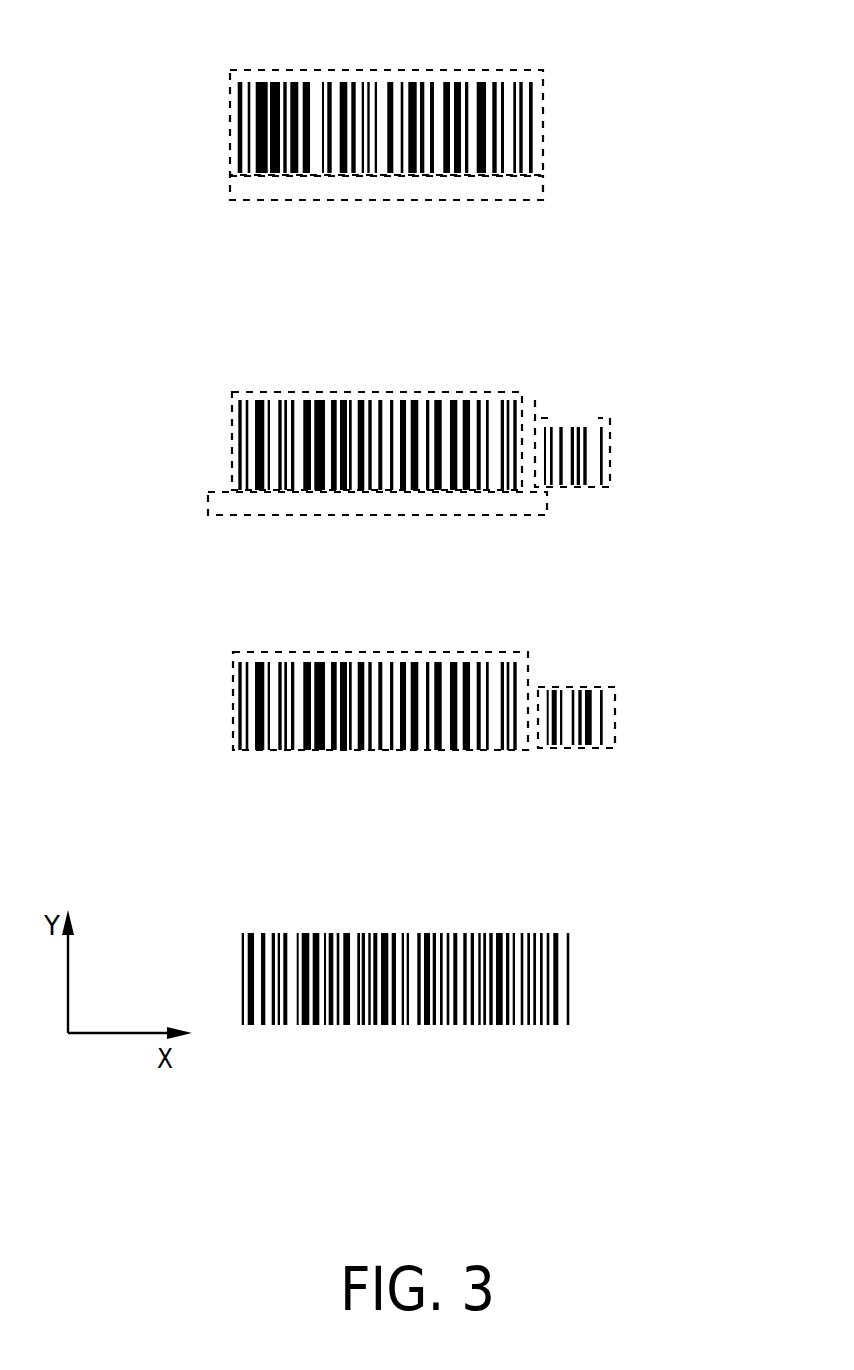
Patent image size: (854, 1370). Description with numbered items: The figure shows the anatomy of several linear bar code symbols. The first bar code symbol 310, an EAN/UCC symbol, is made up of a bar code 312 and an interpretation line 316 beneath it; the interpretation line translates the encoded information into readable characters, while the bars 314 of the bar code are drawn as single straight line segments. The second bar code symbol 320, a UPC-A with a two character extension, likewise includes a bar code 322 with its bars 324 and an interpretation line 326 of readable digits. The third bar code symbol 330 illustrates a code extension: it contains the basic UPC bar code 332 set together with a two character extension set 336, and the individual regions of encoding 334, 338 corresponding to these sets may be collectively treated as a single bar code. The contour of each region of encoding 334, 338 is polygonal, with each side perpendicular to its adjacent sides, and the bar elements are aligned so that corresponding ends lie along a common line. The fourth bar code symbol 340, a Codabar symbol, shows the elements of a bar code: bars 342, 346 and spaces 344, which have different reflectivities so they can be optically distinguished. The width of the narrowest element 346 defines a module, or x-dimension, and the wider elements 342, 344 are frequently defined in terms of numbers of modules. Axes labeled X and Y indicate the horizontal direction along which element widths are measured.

The bar code symbol 310 is at (246, 34).
The bar code 312 is at (523, 72).
The bars of EAN/UCC barcode 314 is at (305, 70).
The interpretation line 316 is at (525, 195).
The bar code symbol 320 is at (264, 343).
The bar code 322 is at (520, 400).
The bars of UPC-A+2 barcode 324 is at (328, 390).
The interpretation line 326 is at (552, 508).
The bar code symbol 330 is at (264, 603).
The basic UPC bar code set 332 is at (525, 663).
The region of encoding 334 is at (333, 647).
The 2 character extension set 336 is at (580, 745).
The region of encoding 338 is at (617, 692).
The bar code symbol 340 is at (264, 883).
The bar 342 is at (432, 920).
The space 344 is at (513, 920).
The narrowest element 346 is at (567, 920).